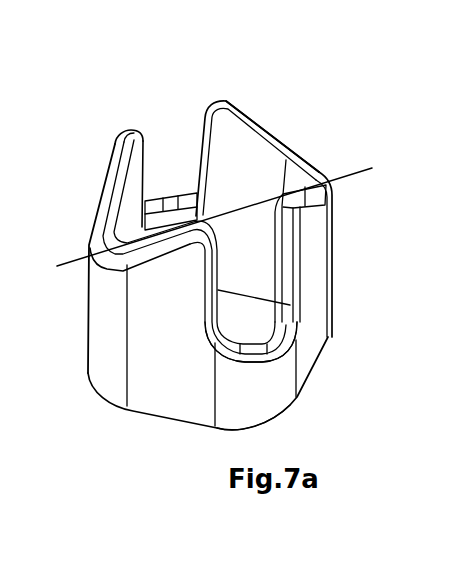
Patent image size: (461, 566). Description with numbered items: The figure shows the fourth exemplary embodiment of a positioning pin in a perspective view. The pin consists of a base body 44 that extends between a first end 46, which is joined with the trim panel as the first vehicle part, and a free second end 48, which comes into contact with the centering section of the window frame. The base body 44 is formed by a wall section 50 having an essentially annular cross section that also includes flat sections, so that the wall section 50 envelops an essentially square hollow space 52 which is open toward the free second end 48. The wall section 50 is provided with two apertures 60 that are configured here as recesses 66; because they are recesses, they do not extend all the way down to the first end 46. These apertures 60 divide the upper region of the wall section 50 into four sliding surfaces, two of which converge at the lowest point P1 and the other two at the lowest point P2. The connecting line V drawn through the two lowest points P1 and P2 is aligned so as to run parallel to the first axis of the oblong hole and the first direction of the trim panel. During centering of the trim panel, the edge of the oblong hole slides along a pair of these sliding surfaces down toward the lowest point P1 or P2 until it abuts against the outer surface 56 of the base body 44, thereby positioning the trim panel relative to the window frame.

The base body 44 is at (208, 347).
The outer surface 56 is at (205, 382).
The first end 46 is at (213, 456).
The free second end 48 is at (332, 104).
The wall section 50 is at (247, 237).
The hollow space 52 is at (231, 170).
The aperture 60 is at (300, 364).
The recess 66 is at (288, 357).
The lowest point P1 is at (43, 265).
The lowest point P2 is at (337, 180).
The connecting line V is at (78, 268).